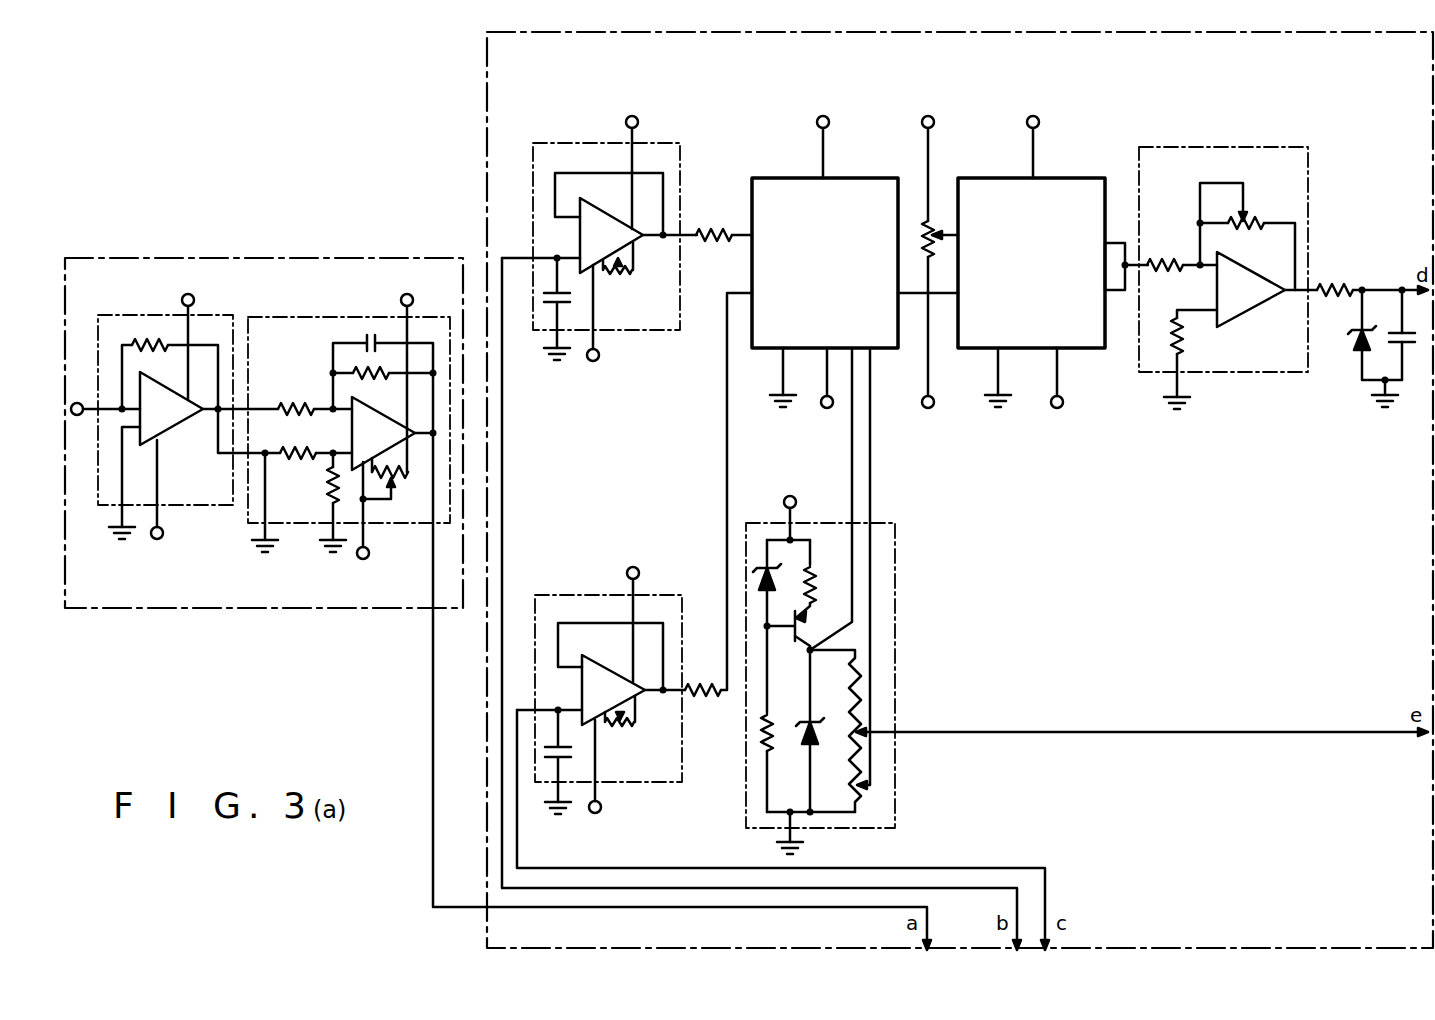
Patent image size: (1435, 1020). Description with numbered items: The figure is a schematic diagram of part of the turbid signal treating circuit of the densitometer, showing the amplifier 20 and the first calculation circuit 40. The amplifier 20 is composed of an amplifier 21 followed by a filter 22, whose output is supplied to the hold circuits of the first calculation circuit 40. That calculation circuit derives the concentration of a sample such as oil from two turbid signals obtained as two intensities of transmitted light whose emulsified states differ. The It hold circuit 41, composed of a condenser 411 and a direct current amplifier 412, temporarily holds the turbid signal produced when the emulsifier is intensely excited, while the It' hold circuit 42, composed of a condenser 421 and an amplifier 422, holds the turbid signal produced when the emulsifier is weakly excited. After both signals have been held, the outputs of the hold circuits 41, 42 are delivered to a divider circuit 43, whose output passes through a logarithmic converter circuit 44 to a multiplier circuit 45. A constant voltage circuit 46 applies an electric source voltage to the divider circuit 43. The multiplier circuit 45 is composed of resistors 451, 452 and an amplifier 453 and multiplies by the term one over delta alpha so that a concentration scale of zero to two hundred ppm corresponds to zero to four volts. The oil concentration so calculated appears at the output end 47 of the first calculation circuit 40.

The amplifier 20 is at (333, 258).
The amplifier 21 is at (160, 315).
The filter 22 is at (333, 317).
The first calculation circuit 40 is at (485, 106).
The It hold circuit 41 is at (557, 143).
The condenser 411 is at (547, 302).
The direct current amplifier 412 is at (615, 208).
The It' hold circuit 42 is at (564, 595).
The condenser 421 is at (548, 760).
The amplifier 422 is at (619, 646).
The divider circuit 43 is at (848, 178).
The logarithmic converter circuit 44 is at (1056, 178).
The multiplier circuit 45 is at (1240, 147).
The resistor 451 is at (1165, 258).
The resistor 452 is at (1182, 335).
The amplifier 453 is at (1248, 313).
The constant voltage circuit 46 is at (897, 578).
The output end 47 is at (1402, 288).